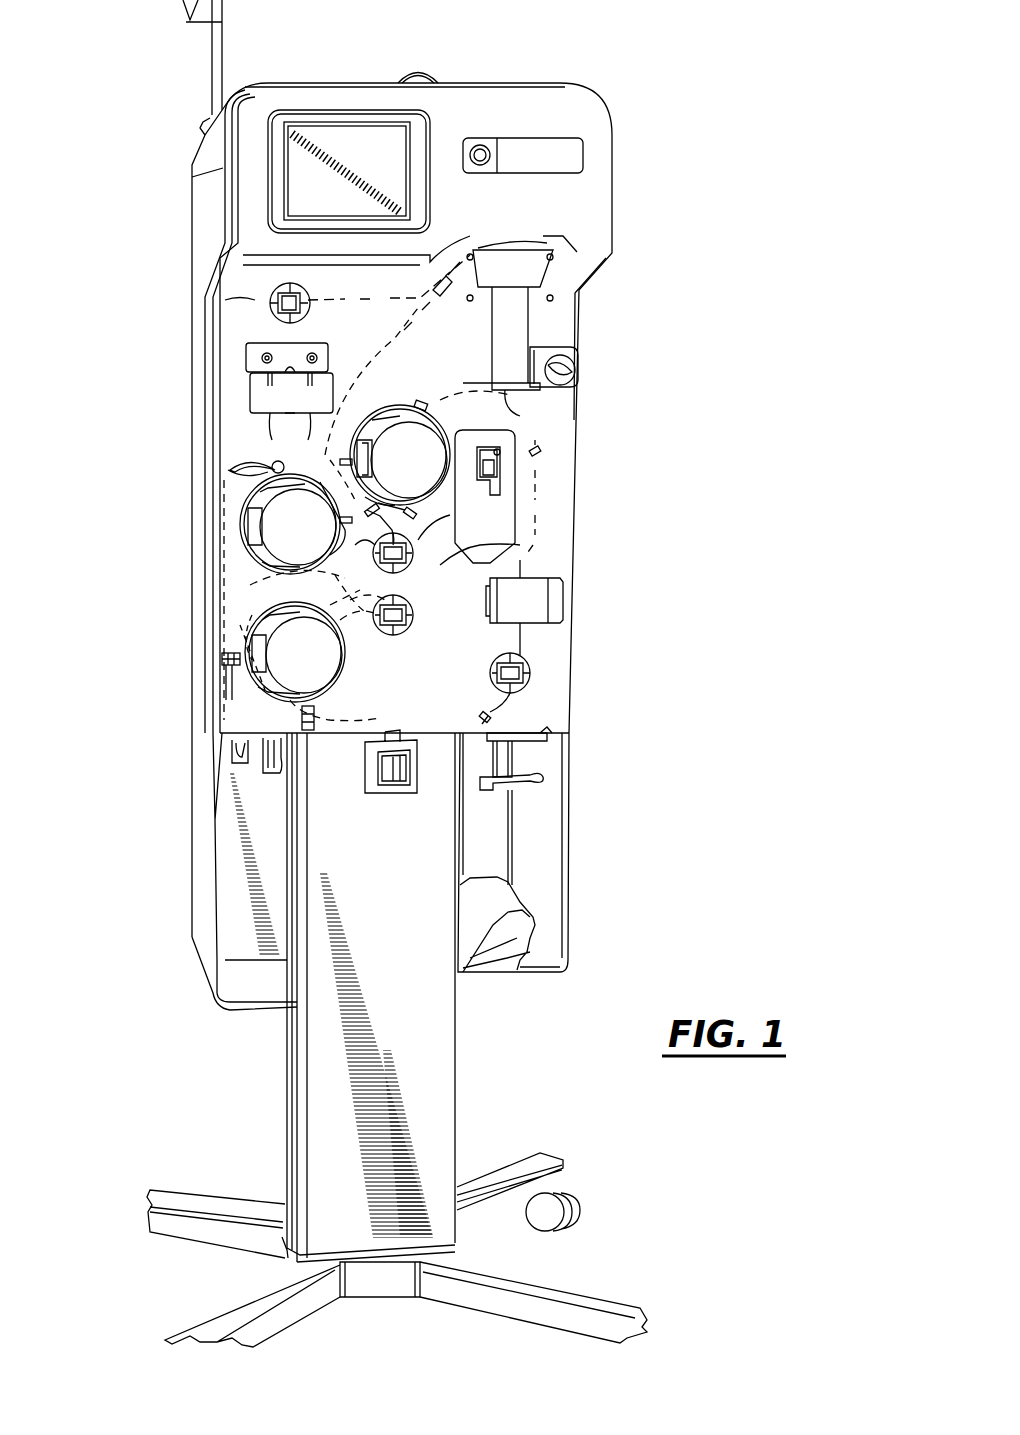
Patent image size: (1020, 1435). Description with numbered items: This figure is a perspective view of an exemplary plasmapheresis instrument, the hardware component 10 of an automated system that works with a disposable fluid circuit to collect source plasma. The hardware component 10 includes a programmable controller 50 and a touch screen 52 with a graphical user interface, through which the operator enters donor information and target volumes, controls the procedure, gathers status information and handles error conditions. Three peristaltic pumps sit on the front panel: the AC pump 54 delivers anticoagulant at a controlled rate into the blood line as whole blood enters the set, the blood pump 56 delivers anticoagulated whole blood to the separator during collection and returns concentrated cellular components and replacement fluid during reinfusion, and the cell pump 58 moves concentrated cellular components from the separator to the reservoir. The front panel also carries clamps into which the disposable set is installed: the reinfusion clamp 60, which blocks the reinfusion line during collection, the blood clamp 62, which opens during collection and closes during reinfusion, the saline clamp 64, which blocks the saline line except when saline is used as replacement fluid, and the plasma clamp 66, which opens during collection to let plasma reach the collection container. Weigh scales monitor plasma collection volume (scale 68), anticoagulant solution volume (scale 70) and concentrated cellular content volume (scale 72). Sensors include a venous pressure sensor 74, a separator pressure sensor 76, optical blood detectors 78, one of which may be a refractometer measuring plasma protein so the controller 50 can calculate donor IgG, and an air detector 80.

The hardware component 10 is at (670, 192).
The programmable controller 50 is at (548, 110).
The touch screen 52 is at (345, 115).
The AC pump 54 is at (280, 526).
The blood pump 56 is at (280, 655).
The cell pump 58 is at (427, 444).
The reinfusion clamp 60 is at (412, 612).
The blood clamp 62 is at (412, 553).
The saline clamp 64 is at (270, 300).
The plasma clamp 66 is at (530, 673).
The weigh scale 68 is at (513, 758).
The weigh scale 70 is at (275, 770).
The weigh scale 72 is at (505, 475).
The venous pressure sensor 74 is at (252, 380).
The separator pressure sensor 76 is at (246, 355).
The optical blood detector 78 is at (530, 605).
The air detector 80 is at (385, 782).